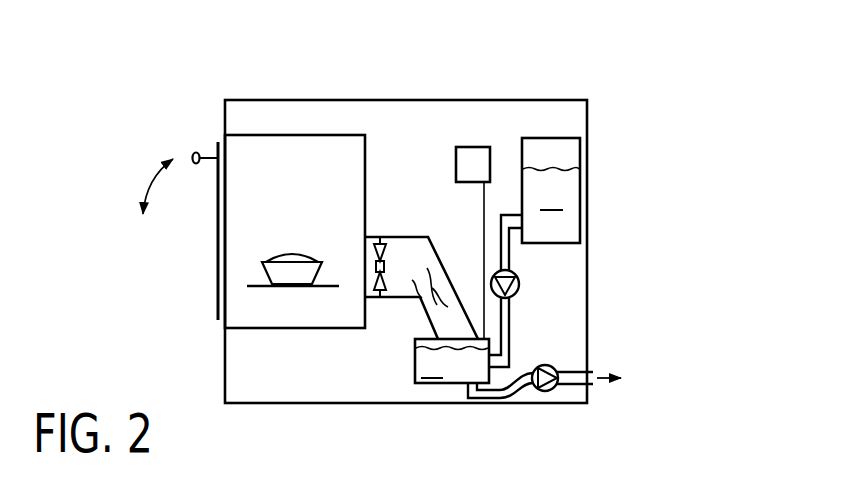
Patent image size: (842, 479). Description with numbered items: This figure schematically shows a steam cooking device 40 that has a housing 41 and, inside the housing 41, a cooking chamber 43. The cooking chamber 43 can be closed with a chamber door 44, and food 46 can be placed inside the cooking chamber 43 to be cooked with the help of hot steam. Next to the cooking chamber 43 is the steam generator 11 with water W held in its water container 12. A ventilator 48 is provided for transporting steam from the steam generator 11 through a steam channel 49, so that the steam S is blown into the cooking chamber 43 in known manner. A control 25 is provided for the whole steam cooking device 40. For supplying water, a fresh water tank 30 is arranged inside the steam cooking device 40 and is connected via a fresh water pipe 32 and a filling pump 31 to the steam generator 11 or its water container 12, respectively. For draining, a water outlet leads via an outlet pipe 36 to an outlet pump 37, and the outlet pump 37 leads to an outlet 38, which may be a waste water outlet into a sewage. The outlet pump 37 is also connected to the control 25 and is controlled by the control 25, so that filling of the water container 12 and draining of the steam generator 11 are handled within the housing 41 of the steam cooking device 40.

The steam cooking device 40 is at (623, 82).
The housing 41 is at (587, 127).
The cooking chamber 43 is at (305, 135).
The chamber door 44 is at (218, 242).
The food 46 is at (302, 245).
The ventilator 48 is at (400, 252).
The steam channel 49 is at (460, 288).
The steam S is at (427, 306).
The control 25 is at (475, 147).
The fresh water tank 30 is at (572, 221).
The filling pump 31 is at (519, 283).
The fresh water pipe 32 is at (510, 320).
The water container 12 is at (452, 376).
The steam generator 11 is at (501, 380).
The outlet pipe 36 is at (527, 392).
The outlet pump 37 is at (553, 369).
The outlet 38 is at (598, 386).